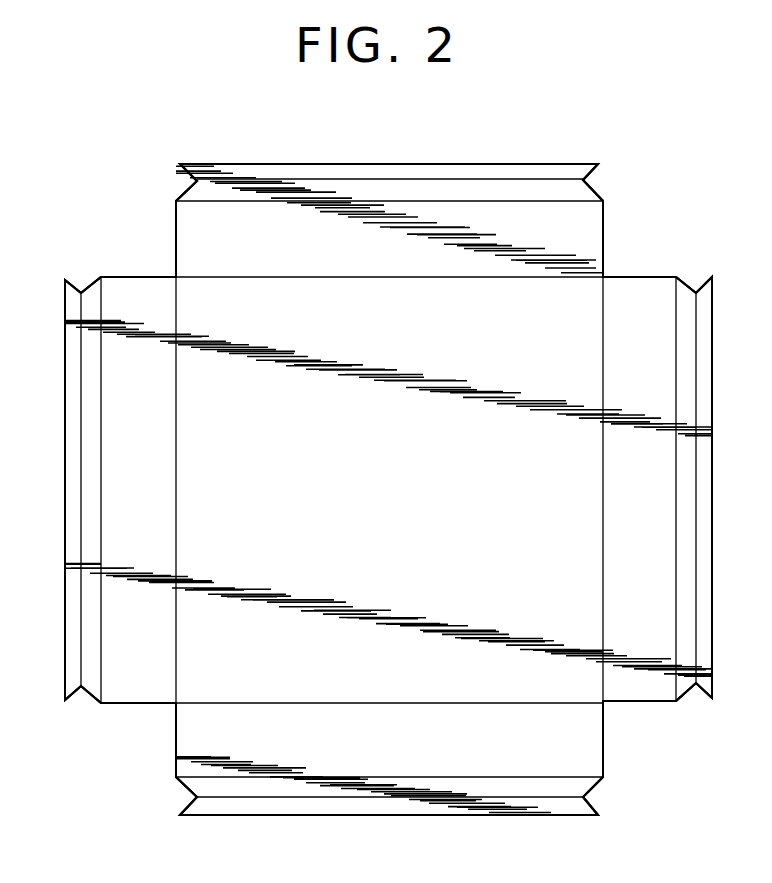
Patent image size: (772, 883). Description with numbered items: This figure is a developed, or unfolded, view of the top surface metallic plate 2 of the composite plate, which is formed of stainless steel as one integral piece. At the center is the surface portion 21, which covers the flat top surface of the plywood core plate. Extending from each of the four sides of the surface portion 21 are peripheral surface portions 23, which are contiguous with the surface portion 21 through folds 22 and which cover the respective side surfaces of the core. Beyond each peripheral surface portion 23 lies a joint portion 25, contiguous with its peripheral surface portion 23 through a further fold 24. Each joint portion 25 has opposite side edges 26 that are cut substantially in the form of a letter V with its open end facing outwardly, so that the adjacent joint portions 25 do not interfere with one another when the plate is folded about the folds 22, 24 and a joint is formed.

The top surface metallic plate 2 is at (369, 478).
The surface portion 21 is at (565, 492).
The folds 22 is at (383, 277).
The peripheral surface portions 23 is at (583, 230).
The folds 24 is at (283, 200).
The joint portions 25 is at (386, 190).
The side edges 26 is at (183, 172).